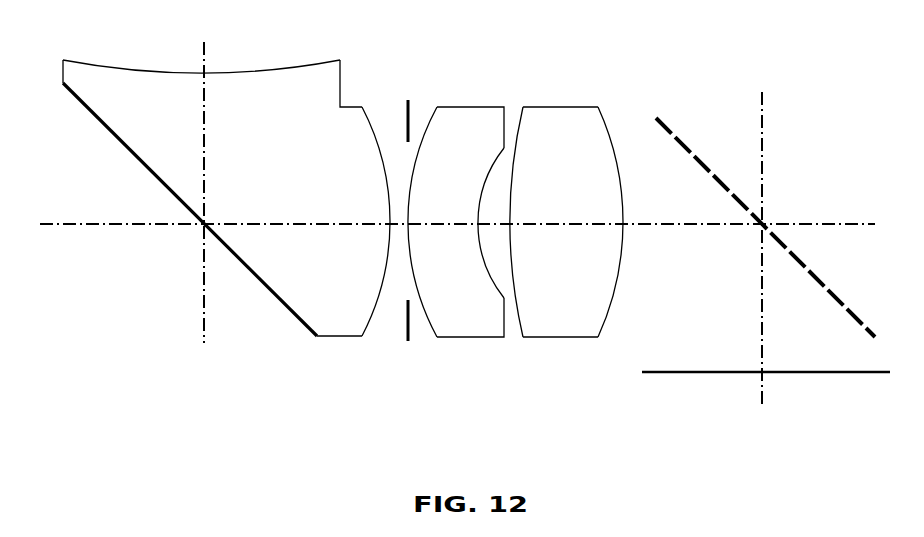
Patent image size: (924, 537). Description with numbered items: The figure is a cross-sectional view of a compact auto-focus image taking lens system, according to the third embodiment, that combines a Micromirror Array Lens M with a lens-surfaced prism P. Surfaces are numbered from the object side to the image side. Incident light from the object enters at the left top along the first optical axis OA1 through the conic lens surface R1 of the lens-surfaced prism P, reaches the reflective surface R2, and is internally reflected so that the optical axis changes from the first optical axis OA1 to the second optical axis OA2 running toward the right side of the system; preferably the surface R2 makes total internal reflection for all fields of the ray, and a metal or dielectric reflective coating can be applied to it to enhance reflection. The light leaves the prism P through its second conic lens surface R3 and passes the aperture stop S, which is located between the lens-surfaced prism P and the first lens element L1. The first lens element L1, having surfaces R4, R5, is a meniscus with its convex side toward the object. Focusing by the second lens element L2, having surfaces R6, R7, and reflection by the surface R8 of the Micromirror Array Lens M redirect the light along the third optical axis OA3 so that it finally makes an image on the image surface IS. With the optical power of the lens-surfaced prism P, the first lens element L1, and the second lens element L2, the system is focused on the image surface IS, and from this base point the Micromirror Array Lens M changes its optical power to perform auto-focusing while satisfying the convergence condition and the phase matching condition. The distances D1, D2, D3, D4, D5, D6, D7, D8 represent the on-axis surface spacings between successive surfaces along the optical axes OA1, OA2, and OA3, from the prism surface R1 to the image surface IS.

The lens-surfaced prism P is at (221, 178).
The conic lens surface of lens-surfaced prism (object side) R1 is at (157, 70).
The reflective surface of lens-surfaced prism R2 is at (108, 132).
The conic lens surface of lens-surfaced prism (image side) R3 is at (387, 198).
The aperture stop S is at (407, 343).
The first lens element L1 is at (443, 240).
The object-side surface of first lens element R4 is at (433, 120).
The image-side surface of first lens element R5 is at (482, 202).
The second lens element L2 is at (578, 240).
The object-side surface of second lens element R6 is at (518, 122).
The image-side surface of second lens element R7 is at (618, 160).
The Micromirror Array Lens M is at (765, 203).
The reflecting surface of Micromirror Array Lens R8 is at (790, 217).
The image surface IS is at (830, 383).
The first optical axis OA1 is at (207, 53).
The second optical axis OA2 is at (102, 226).
The third optical axis OA3 is at (763, 402).
The on-axis surface spacing D1 is at (207, 137).
The on-axis surface spacing D2 is at (318, 226).
The on-axis surface spacing D3 is at (403, 227).
The on-axis surface spacing D4 is at (445, 228).
The on-axis surface spacing D5 is at (495, 227).
The on-axis surface spacing D6 is at (547, 226).
The on-axis surface spacing D7 is at (655, 226).
The on-axis surface spacing D8 is at (763, 305).